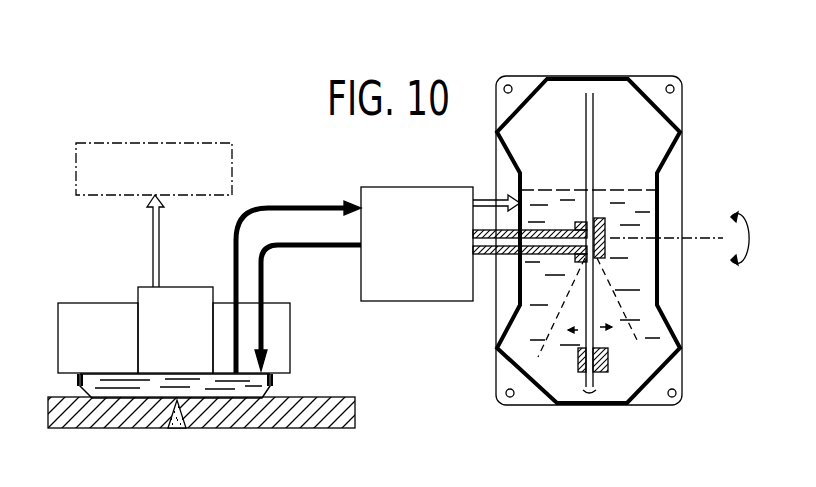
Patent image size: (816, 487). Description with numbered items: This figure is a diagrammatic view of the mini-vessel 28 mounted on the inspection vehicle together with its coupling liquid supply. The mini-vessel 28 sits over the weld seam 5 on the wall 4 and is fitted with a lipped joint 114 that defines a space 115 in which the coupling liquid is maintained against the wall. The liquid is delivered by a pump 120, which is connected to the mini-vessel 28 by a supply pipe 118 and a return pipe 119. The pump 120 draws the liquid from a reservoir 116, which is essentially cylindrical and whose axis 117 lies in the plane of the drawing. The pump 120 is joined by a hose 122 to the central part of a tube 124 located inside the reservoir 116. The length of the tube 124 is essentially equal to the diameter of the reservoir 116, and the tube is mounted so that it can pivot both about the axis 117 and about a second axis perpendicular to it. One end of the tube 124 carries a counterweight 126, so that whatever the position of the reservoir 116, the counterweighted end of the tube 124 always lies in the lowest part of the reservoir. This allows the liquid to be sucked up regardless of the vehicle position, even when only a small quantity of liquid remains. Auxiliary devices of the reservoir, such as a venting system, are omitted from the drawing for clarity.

The wall 4 is at (115, 413).
The weld seam 5 is at (175, 428).
The mini-vessel 28 is at (85, 313).
The lipped joint 114 is at (273, 387).
The space 115 is at (227, 387).
The reservoir 116 is at (668, 105).
The axis 117 is at (702, 230).
The supply pipe 118 is at (284, 247).
The return pipe 119 is at (272, 208).
The pump 120 is at (417, 282).
The hose 122 is at (492, 254).
The tube 124 is at (592, 296).
The counterweight 126 is at (608, 363).